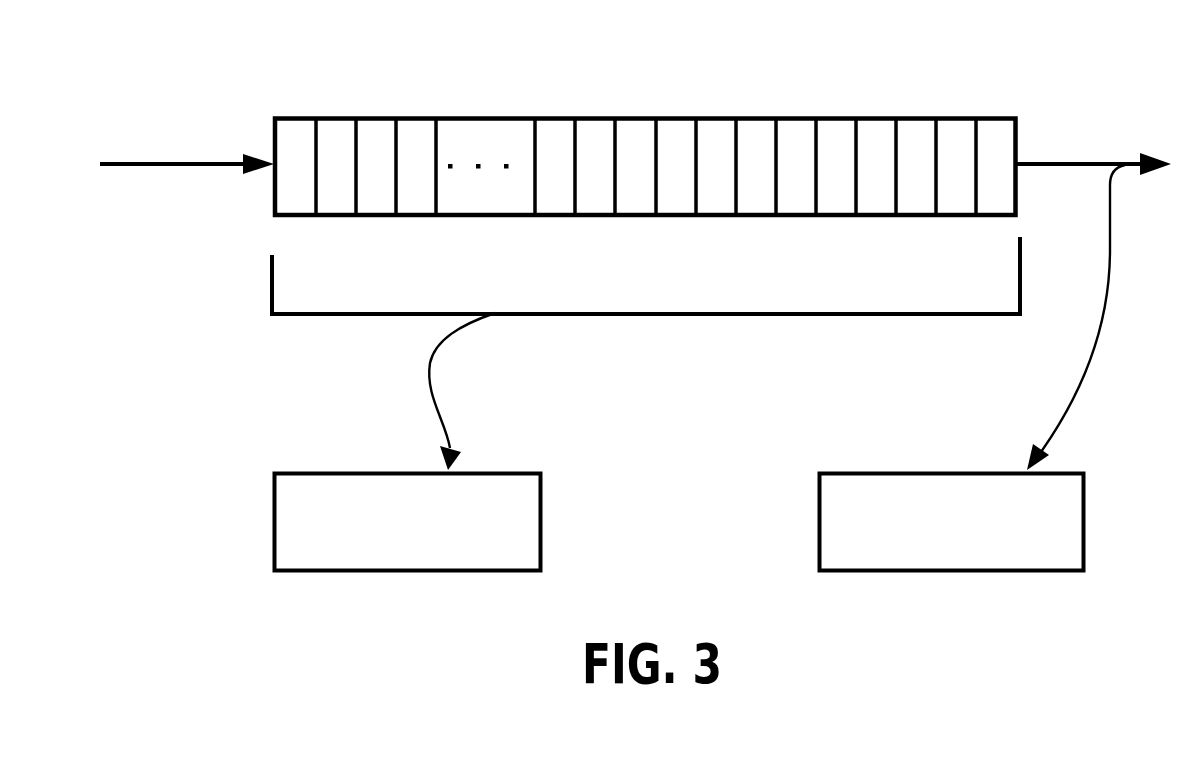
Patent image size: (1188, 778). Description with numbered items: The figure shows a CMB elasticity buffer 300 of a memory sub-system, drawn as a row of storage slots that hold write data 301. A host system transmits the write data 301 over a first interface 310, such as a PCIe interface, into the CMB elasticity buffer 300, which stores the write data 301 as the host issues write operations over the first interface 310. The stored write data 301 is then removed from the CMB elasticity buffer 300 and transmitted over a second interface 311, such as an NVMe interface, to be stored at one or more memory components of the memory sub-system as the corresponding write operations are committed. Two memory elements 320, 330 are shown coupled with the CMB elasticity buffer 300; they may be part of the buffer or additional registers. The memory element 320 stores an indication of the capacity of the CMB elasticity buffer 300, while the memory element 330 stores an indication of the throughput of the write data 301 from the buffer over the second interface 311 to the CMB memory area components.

The CMB elasticity buffer 300 is at (1011, 117).
The write data 301 is at (557, 140).
The first interface 310 is at (121, 163).
The second interface 311 is at (1088, 163).
The memory element 320 is at (387, 547).
The memory element 330 is at (930, 547).